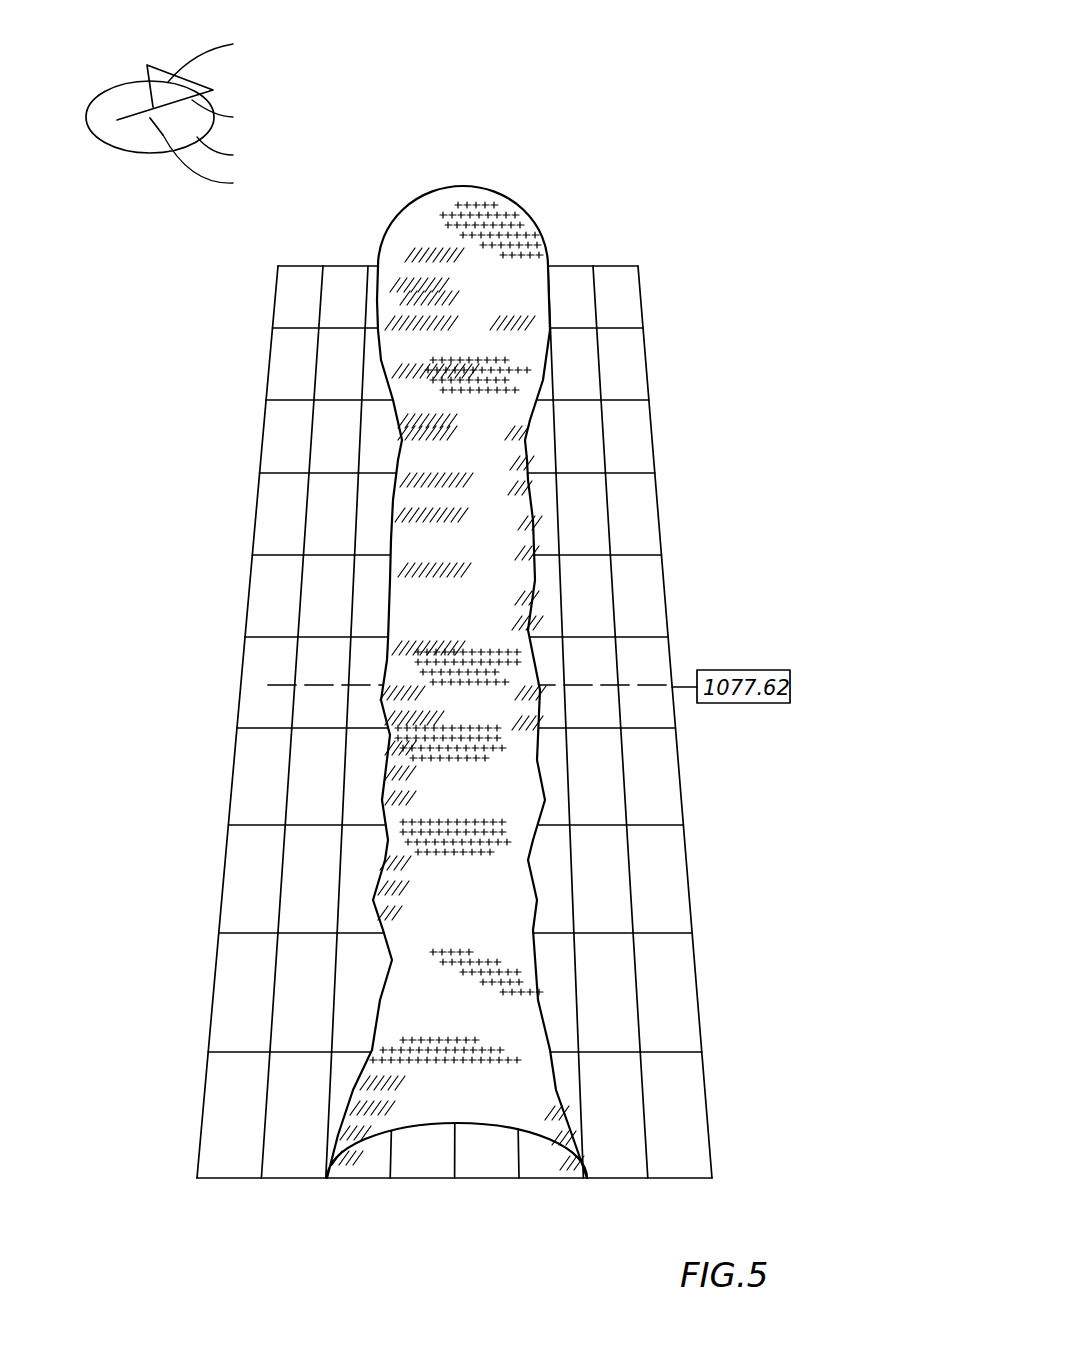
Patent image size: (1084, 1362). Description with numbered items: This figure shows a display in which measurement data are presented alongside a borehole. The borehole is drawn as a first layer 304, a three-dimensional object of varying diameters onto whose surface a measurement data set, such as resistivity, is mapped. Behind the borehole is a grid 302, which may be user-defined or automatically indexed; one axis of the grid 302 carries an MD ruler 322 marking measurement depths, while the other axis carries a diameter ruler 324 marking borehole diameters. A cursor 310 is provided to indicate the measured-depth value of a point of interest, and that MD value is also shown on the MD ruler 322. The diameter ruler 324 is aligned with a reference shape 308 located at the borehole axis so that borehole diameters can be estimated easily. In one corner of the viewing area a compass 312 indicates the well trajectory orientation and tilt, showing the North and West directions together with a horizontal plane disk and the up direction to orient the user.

The grid 302 is at (242, 323).
The first layer 304 is at (368, 349).
The reference shape 308 is at (352, 1152).
The cursor 310 is at (278, 684).
The compass 312 is at (90, 102).
The MD ruler 322 is at (696, 995).
The diameter ruler 324 is at (503, 1182).